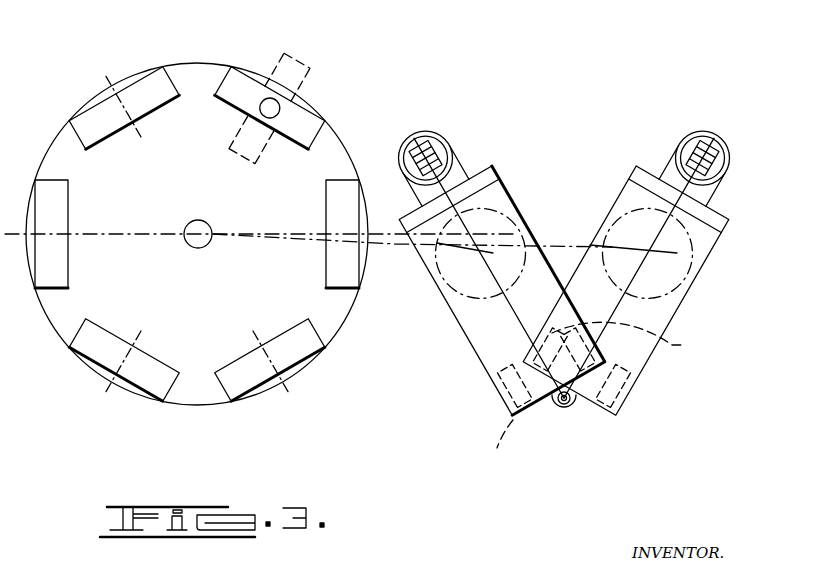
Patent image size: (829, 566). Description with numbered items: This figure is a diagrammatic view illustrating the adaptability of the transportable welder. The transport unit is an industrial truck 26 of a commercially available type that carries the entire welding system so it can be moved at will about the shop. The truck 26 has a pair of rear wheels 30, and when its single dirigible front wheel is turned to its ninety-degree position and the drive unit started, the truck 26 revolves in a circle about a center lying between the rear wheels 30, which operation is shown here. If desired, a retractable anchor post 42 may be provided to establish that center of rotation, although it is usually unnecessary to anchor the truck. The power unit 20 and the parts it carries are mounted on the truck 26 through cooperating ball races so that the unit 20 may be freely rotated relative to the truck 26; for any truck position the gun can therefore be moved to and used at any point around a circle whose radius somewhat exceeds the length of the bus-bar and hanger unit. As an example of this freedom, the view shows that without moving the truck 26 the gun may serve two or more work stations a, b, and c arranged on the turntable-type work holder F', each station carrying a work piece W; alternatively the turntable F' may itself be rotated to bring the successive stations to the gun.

The turntable work holder F' is at (197, 234).
The work piece W is at (157, 112).
The work station a is at (238, 78).
The work station b is at (338, 181).
The work station c is at (305, 347).
The power unit 20 is at (502, 208).
The industrial truck 26 is at (532, 214).
The rear wheels 30 is at (597, 394).
The retractable anchor post 42 is at (565, 406).